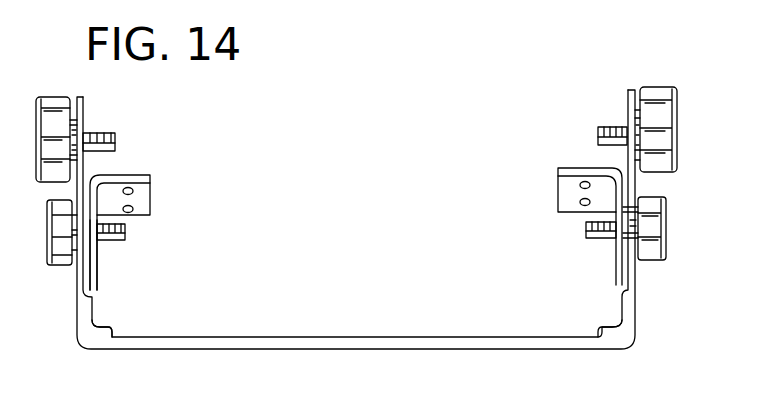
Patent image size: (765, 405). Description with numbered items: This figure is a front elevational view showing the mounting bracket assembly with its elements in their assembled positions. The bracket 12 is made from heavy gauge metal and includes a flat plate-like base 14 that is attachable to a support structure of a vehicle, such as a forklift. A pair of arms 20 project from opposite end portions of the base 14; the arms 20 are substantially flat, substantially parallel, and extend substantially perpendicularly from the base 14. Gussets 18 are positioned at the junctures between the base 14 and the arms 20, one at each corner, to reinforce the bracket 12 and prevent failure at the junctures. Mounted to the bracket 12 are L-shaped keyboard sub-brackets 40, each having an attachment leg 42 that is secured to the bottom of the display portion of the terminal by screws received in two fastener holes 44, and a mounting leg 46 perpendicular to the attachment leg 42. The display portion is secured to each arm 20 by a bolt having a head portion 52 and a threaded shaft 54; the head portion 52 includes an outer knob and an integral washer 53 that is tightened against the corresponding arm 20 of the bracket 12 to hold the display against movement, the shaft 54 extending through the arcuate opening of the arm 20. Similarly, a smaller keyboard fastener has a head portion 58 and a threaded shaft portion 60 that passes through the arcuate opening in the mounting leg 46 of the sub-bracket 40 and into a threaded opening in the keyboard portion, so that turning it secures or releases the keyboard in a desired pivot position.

The bracket 12 is at (672, 265).
The base 14 is at (500, 343).
The gussets 18 is at (112, 330).
The arms 20 is at (640, 186).
The keyboard sub-bracket 40 is at (560, 228).
The attachment leg 42 is at (120, 175).
The fastener holes 44 is at (133, 209).
The mounting leg 46 is at (97, 272).
The head portion 52 is at (50, 97).
The integral washer 53 is at (72, 140).
The threaded shaft 54 is at (105, 133).
The head portion 58 is at (60, 265).
The threaded shaft portion 60 is at (125, 234).